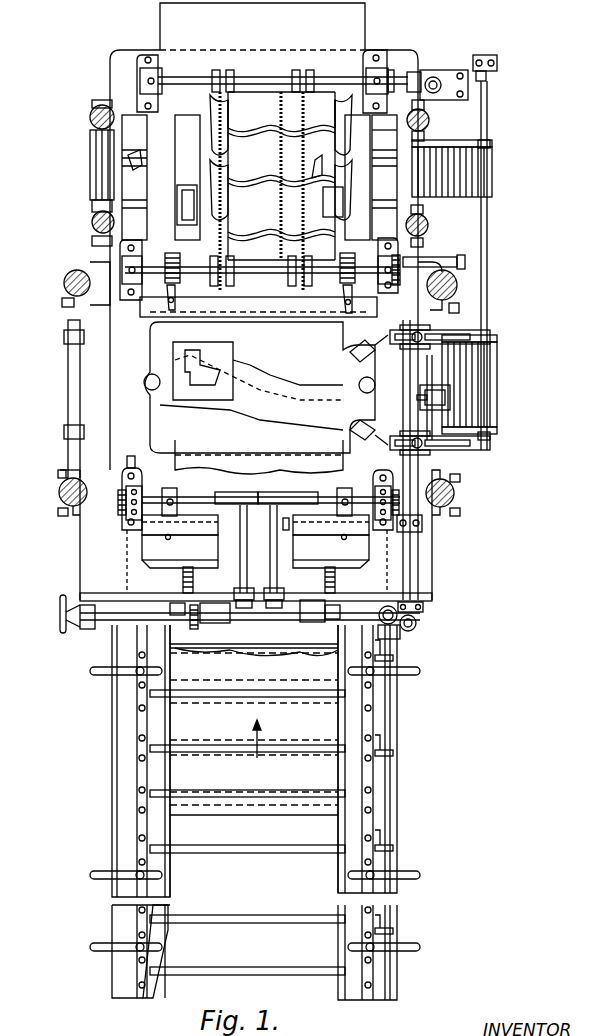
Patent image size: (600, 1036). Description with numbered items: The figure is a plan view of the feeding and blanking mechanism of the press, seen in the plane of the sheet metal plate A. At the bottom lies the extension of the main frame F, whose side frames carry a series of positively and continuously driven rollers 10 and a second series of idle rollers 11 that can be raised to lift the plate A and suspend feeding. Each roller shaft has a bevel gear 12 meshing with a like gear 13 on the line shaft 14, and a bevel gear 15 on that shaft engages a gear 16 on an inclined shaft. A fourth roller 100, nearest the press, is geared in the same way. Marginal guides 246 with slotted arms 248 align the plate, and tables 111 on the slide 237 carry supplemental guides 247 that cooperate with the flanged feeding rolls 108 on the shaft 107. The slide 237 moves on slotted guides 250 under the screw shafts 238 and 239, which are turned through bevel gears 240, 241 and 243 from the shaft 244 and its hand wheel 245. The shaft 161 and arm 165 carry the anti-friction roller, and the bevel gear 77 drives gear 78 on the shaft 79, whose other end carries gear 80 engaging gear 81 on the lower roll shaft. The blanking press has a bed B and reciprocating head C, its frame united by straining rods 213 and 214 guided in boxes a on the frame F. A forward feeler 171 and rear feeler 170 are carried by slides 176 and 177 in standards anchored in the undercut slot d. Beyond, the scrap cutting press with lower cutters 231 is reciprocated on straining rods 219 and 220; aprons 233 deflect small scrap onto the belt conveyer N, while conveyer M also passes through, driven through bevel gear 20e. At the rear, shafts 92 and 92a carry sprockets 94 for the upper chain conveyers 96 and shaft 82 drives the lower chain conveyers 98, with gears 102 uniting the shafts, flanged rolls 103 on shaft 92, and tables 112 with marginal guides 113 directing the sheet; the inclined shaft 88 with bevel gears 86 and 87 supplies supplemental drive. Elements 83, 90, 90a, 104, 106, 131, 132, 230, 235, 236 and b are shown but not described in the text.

The feeding rollers 10 is at (150, 752).
The idle rollers 11 is at (152, 815).
The bevel gear 12 is at (392, 650).
The bevel gear 13 is at (394, 658).
The line shaft 14 is at (392, 708).
The bevel gear 15 is at (383, 630).
The bevel gear 16 is at (380, 612).
The bevel gear 77 is at (416, 626).
The bevel gear 78 is at (418, 614).
The shaft 79 is at (403, 372).
The bevel gear 80 is at (412, 511).
The bevel gear 81 is at (389, 500).
The lower chain conveyer shaft 82 is at (405, 270).
The arm 83 is at (434, 262).
The bevel gear 86 is at (450, 66).
The bevel gear 87 is at (418, 72).
The inclined shaft 88 is at (438, 92).
The bearing 90 is at (390, 72).
The bearing 90a is at (140, 75).
The upper chain conveyer shaft 92 is at (210, 282).
The upper chain conveyer shaft 92a is at (170, 80).
The sprockets 94 is at (224, 70).
The upper chain conveyers 96 is at (281, 157).
The lower chain conveyers 98 is at (256, 112).
The fourth roller 100 is at (287, 656).
The gears 102 is at (120, 276).
The flanged rolls 103 is at (340, 278).
The gear 104 is at (178, 285).
The gear 106 is at (118, 510).
The feed roll shaft 107 is at (230, 504).
The flanged guiding and feeding rolls 108 is at (178, 495).
The guiding and supporting tables 111 is at (261, 558).
The tables 112 is at (258, 313).
The marginal guides 113 is at (167, 292).
The rod 131 is at (277, 556).
The pin 132 is at (279, 531).
The shaft 161 is at (250, 556).
The arm 165 is at (288, 492).
The rear feeler 170 is at (348, 432).
The forward feeler 171 is at (369, 354).
The slide 176 is at (468, 450).
The slide 177 is at (390, 332).
The straining rod 213 is at (60, 496).
The straining rod 214 is at (64, 283).
The straining rod 219 is at (90, 116).
The straining rod 220 is at (92, 226).
The block 230 is at (187, 205).
The lower cutters 231 is at (329, 186).
The aprons 233 is at (259, 177).
The block 235 is at (384, 155).
The lever 236 is at (137, 171).
The slide 237 is at (122, 476).
The screw threaded shaft 238 is at (193, 580).
The screw threaded shaft 239 is at (325, 578).
The bevel gear 240 is at (322, 614).
The bevel gear 241 is at (256, 625).
The bevel gear 243 is at (196, 628).
The shaft 244 is at (250, 630).
The hand wheel 245 is at (63, 633).
The marginal guides 246 is at (172, 683).
The supplemental guides 247 is at (340, 527).
The slotted arms 248 is at (96, 676).
The slotted guides 250 is at (126, 572).
The bevel gear 20e is at (488, 92).
The sheet metal plate A is at (258, 829).
The bed B is at (251, 387).
The reciprocating head C is at (281, 176).
The main frame F is at (210, 291).
The belt conveyer M is at (497, 392).
The belt conveyer N is at (494, 178).
The guide boxes a is at (455, 278).
The opening b is at (200, 387).
The undercut slot d is at (433, 397).